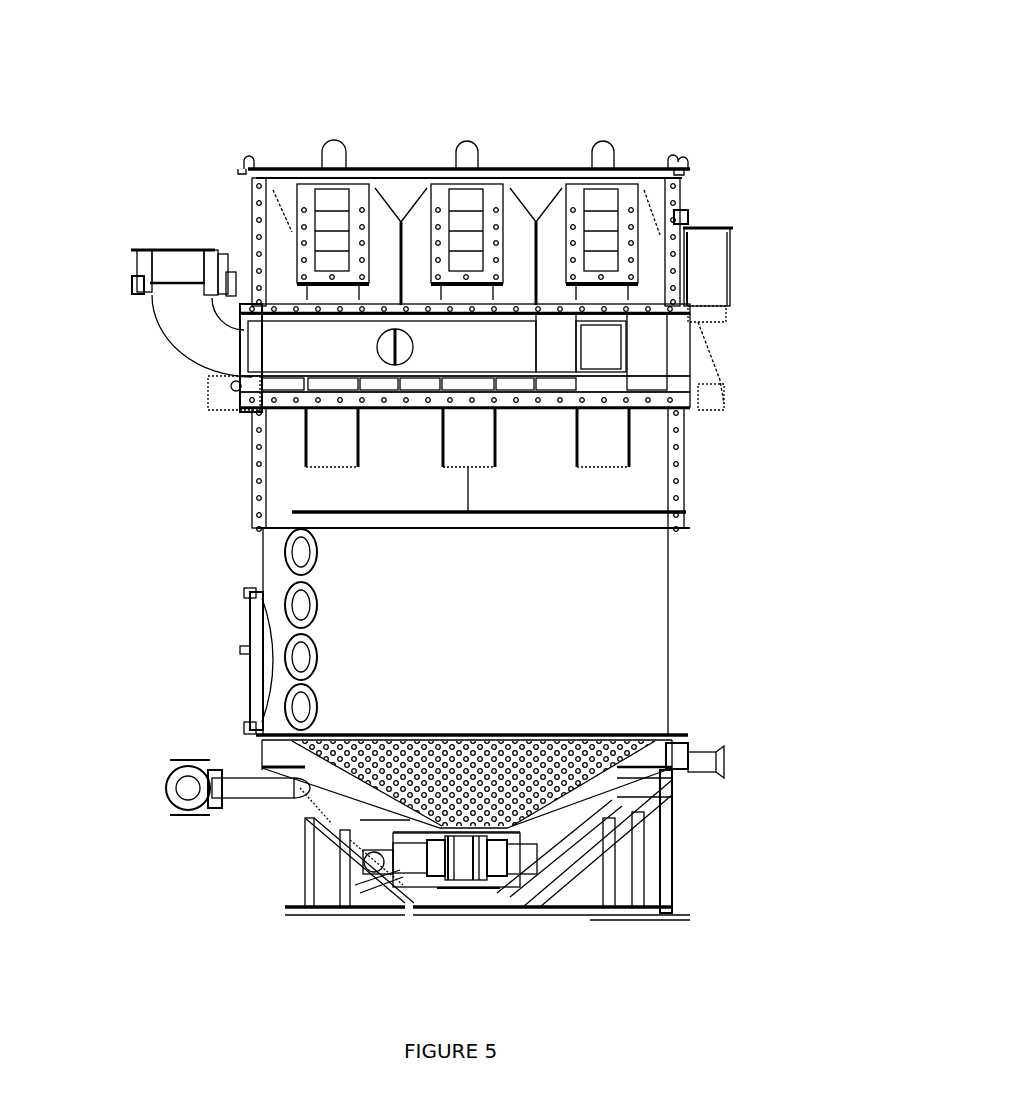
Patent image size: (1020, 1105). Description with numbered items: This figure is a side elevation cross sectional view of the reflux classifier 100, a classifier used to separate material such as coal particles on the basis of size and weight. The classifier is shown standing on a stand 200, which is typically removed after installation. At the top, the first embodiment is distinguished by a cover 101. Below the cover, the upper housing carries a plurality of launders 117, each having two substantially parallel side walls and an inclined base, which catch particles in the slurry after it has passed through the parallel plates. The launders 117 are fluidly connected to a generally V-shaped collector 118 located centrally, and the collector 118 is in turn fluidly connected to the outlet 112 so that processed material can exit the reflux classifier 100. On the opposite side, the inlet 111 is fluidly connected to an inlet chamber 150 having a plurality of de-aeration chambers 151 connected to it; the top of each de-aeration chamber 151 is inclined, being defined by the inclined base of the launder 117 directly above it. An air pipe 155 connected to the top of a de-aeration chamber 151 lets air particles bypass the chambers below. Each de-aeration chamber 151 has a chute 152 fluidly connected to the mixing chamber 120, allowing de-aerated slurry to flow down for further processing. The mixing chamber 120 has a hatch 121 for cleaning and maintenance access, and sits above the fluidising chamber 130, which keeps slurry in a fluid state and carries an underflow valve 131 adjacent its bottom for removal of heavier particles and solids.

The reflux classifier 100 is at (762, 86).
The cover 101 is at (292, 167).
The inlet 111 is at (148, 245).
The outlet 112 is at (731, 223).
The launder 117 is at (598, 205).
The collector 118 is at (286, 265).
The mixing chamber 120 is at (650, 598).
The hatch 121 is at (246, 638).
The fluidising chamber 130 is at (672, 750).
The underflow valve 131 is at (471, 886).
The inlet chamber 150 is at (641, 368).
The de-aeration chamber 151 is at (601, 352).
The chute 152 is at (627, 454).
The air pipe 155 is at (603, 140).
The stand 200 is at (672, 870).